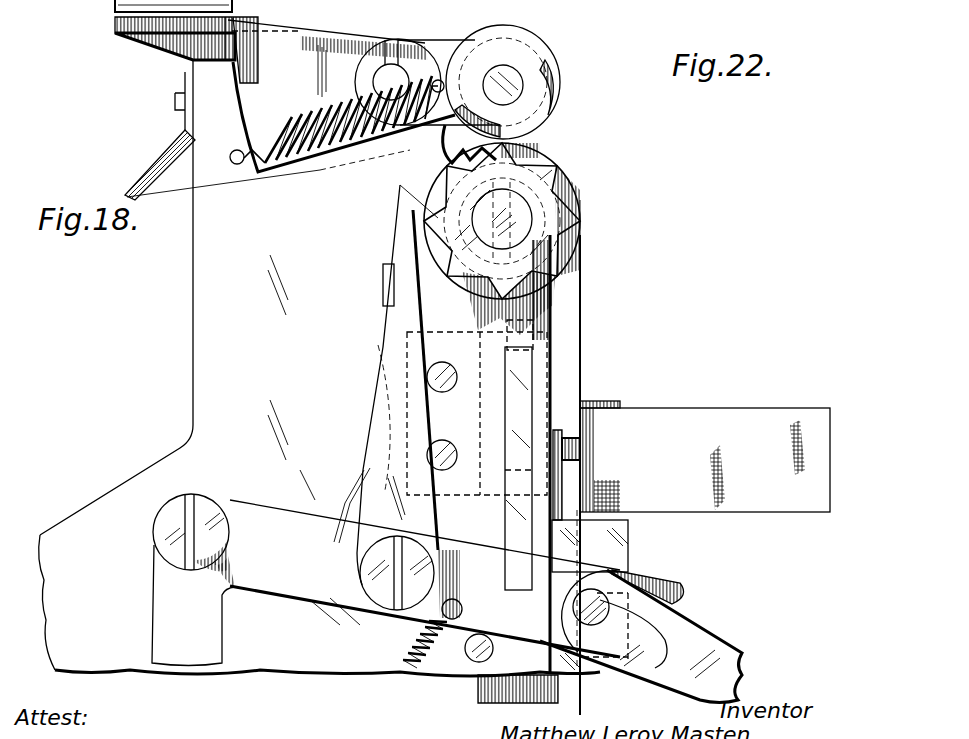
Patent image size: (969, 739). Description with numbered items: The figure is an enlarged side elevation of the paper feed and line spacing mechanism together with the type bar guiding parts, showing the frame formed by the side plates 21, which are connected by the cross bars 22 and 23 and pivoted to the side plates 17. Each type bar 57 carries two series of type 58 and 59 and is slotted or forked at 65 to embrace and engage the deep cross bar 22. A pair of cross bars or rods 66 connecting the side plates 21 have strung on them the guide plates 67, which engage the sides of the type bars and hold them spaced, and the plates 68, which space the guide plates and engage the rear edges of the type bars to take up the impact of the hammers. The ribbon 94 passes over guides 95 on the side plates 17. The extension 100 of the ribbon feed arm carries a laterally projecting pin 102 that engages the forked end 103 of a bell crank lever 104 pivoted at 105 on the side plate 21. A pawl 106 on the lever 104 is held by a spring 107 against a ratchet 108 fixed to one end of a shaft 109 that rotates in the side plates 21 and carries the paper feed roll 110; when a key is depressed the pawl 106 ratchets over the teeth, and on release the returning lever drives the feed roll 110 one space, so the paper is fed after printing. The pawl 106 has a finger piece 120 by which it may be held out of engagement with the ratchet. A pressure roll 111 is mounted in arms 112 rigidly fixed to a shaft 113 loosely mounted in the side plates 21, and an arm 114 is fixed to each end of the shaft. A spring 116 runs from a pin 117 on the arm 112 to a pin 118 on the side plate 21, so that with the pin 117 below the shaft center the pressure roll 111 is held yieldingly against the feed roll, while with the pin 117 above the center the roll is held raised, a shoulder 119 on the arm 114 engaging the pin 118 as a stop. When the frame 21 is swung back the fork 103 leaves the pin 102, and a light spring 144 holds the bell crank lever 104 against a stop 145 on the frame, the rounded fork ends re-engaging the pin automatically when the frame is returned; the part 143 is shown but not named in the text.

In FIG. 18, the side plates 17 is at (612, 542).
In FIG. 18, the side plates 21 is at (319, 368).
In FIG. 18, the cross bar 22 is at (519, 455).
In FIG. 18, the cross bar 23 is at (185, 75).
In FIG. 18, the type bar 57 is at (516, 703).
In FIG. 18, the type 58 is at (580, 448).
In FIG. 18, the type 59 is at (573, 568).
In FIG. 18, the slot 65 is at (505, 520).
In FIG. 18, the cross bars 66 is at (443, 392).
In FIG. 18, the guide plates 67 is at (535, 330).
In FIG. 18, the plates 68 is at (480, 352).
In FIG. 18, the ribbon 94 is at (705, 460).
In FIG. 18, the guides 95 is at (610, 400).
In FIG. 18, the extension 100 is at (641, 636).
In FIG. 18, the pin 102 is at (593, 598).
In FIG. 18, the forked end 103 is at (682, 585).
In FIG. 18, the bell crank lever 104 is at (425, 578).
In FIG. 18, the pivot 105 is at (205, 510).
In FIG. 18, the pawl 106 is at (388, 325).
In FIG. 18, the spring 107 is at (353, 483).
In FIG. 22, the ratchet 108 is at (552, 178).
In FIG. 22, the shaft 109 is at (510, 205).
In FIG. 22, the paper feed roll 110 is at (582, 202).
In FIG. 22, the pressure roll 111 is at (548, 62).
In FIG. 22, the arms 112 is at (455, 50).
In FIG. 22, the shaft 113 is at (400, 58).
In FIG. 22, the arm 114 is at (341, 96).
In FIG. 22, the spring 116 is at (345, 150).
In FIG. 22, the pin 117 is at (448, 144).
In FIG. 22, the pin 118 is at (236, 165).
In FIG. 22, the shoulder 119 is at (220, 62).
In FIG. 18, the finger piece 120 is at (383, 270).
In FIG. 18, the blade 143 is at (160, 172).
In FIG. 18, the spring 144 is at (418, 633).
In FIG. 18, the stop 145 is at (474, 660).